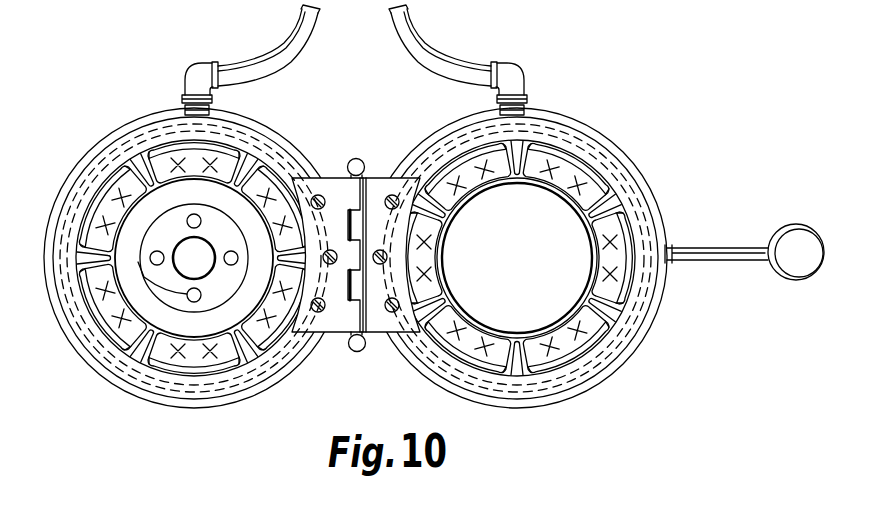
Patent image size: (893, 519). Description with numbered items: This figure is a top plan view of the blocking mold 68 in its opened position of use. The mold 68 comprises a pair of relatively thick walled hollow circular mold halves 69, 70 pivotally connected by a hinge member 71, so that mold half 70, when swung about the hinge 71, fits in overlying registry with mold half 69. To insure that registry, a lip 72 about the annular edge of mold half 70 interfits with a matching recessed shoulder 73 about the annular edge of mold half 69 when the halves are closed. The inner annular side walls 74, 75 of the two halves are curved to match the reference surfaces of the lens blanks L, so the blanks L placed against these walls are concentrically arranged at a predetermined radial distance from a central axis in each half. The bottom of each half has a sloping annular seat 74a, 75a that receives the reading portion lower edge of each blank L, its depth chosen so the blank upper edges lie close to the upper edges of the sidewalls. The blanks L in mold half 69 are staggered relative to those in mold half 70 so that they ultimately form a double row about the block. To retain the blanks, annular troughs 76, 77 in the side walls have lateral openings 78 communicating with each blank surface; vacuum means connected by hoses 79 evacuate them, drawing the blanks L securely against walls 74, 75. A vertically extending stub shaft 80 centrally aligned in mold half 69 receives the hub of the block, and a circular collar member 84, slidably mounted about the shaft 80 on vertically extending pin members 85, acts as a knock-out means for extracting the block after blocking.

The blocking mold 68 is at (595, 263).
The mold half 69 is at (202, 394).
The mold half 70 is at (421, 360).
The hinge member 71 is at (349, 339).
The lip 72 is at (643, 332).
The recessed shoulder 73 is at (105, 374).
The inner annular side wall 74 is at (264, 379).
The sloping annular seat 74a is at (258, 365).
The inner annular side wall 75 is at (523, 367).
The sloping annular seat 75a is at (497, 360).
The annular trough 76 is at (137, 132).
The annular trough 77 is at (583, 117).
The lateral openings 78 is at (82, 338).
The hoses 79 is at (404, 50).
The stub shaft 80 is at (199, 251).
The collar member 84 is at (155, 233).
The pin members 85 is at (150, 256).
The lens blanks L is at (95, 268).